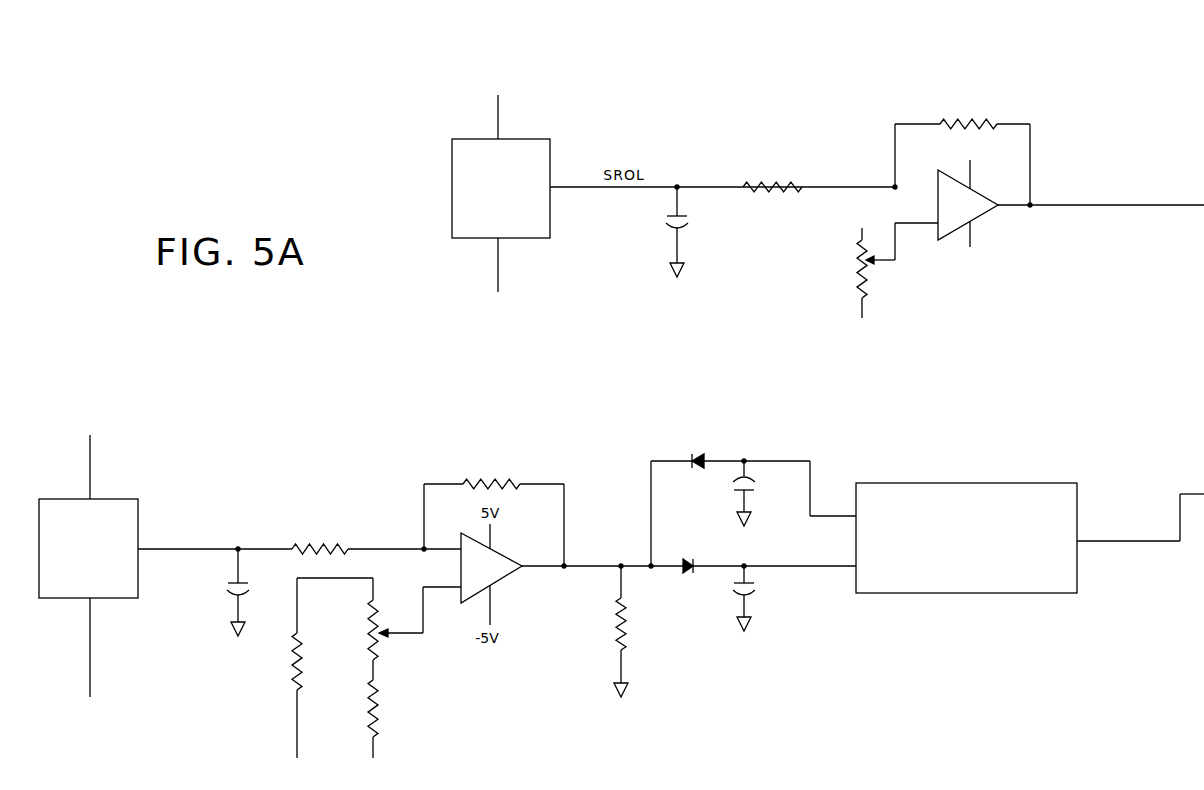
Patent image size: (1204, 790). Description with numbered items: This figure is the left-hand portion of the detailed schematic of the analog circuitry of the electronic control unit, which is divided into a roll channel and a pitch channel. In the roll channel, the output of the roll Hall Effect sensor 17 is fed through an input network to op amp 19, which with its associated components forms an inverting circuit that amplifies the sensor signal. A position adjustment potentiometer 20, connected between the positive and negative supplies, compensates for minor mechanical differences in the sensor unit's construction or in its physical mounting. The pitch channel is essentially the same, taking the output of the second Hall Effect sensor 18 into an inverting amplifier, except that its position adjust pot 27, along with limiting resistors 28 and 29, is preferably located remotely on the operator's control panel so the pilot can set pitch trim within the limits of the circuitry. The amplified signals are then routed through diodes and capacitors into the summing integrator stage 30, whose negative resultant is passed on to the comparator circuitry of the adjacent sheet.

The roll Hall Effect sensor 17 is at (501, 196).
The Hall Effect sensor 18 is at (88, 569).
The op amp 19 is at (963, 194).
The position adjustment potentiometer 20 is at (868, 276).
The position adjust pot 27 is at (360, 619).
The limiting resistor 28 is at (287, 679).
The limiting resistor 29 is at (385, 720).
The integrator stage 30 is at (966, 538).